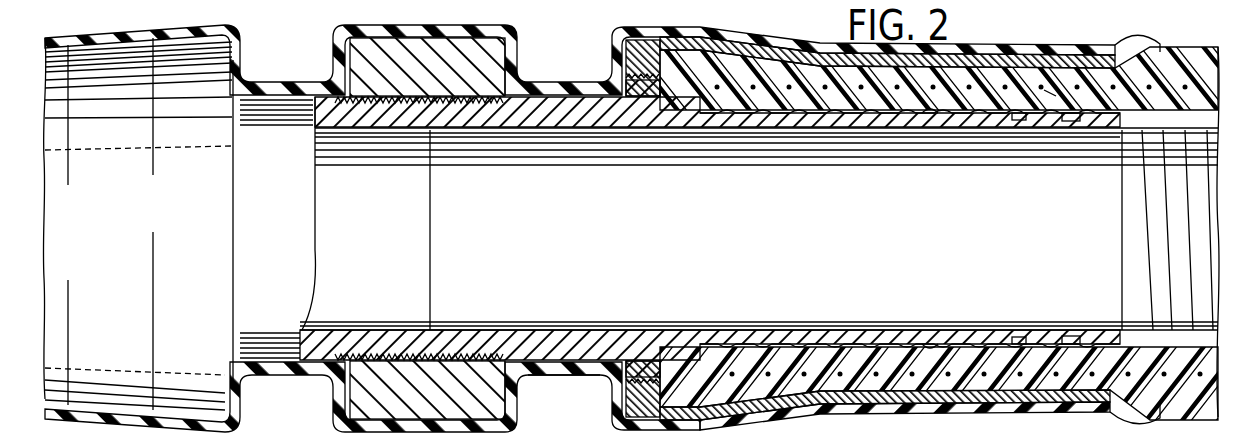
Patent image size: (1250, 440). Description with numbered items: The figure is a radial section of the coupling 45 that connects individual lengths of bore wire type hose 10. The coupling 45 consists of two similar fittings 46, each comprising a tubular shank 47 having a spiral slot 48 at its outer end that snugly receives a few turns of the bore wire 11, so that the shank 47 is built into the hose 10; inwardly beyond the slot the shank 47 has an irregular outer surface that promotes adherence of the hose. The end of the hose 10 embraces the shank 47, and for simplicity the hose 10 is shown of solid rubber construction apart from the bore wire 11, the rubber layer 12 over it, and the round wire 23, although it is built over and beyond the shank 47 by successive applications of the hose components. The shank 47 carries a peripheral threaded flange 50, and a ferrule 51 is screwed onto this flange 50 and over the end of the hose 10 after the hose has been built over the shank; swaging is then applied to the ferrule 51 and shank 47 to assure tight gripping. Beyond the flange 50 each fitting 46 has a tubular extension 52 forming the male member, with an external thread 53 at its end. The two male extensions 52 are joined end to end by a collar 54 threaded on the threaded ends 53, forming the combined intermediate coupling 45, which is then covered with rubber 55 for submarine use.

The hose 10 is at (1224, 70).
The bore wire 11 is at (1020, 115).
The rubber layer 12 is at (930, 110).
The round wire 23 is at (1050, 92).
The coupling 45 is at (586, 379).
The fitting 46 is at (393, 130).
The tubular shank 47 is at (800, 128).
The spiral slot 48 is at (1070, 120).
The peripheral threaded flange 50 is at (635, 88).
The ferrule 51 is at (111, 189).
The tubular extension 52 is at (390, 122).
The external thread 53 is at (442, 106).
The collar 54 is at (360, 52).
The rubber 55 is at (503, 34).